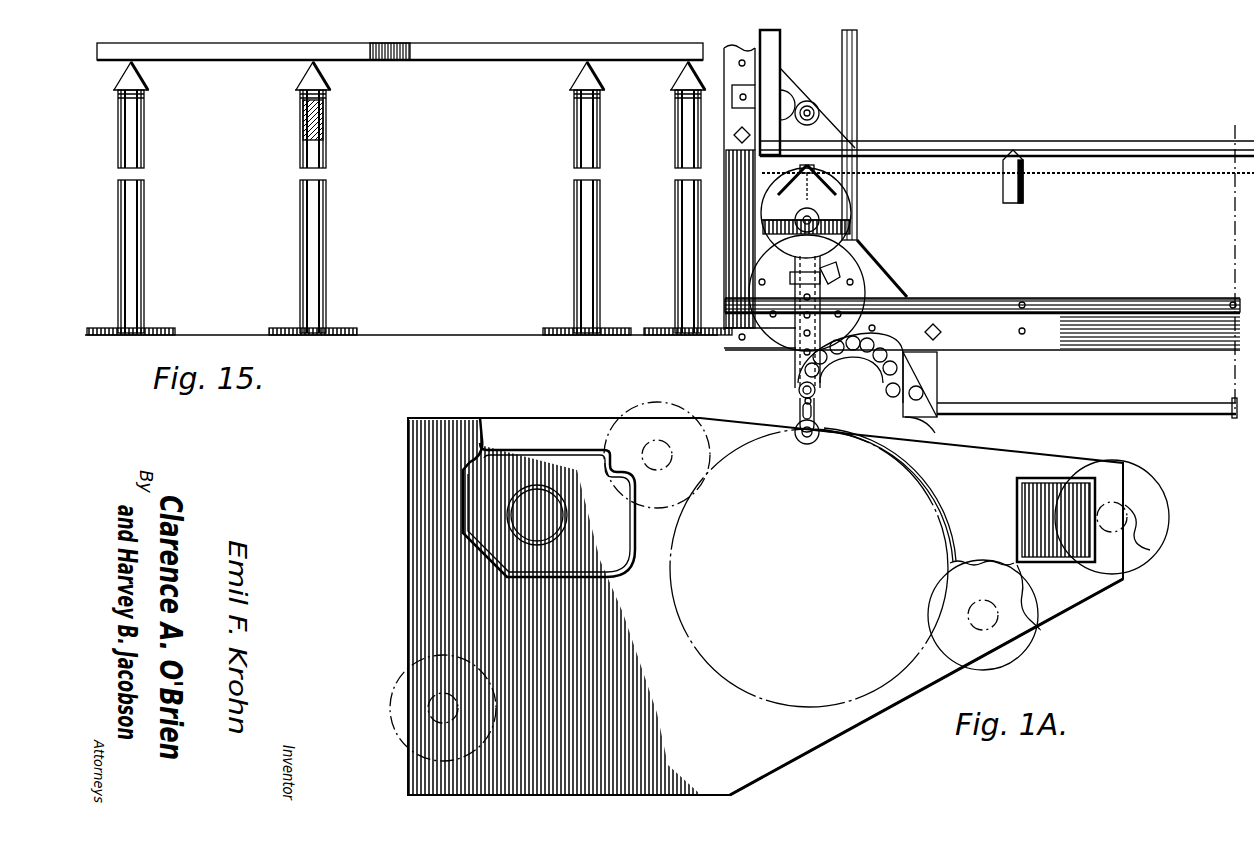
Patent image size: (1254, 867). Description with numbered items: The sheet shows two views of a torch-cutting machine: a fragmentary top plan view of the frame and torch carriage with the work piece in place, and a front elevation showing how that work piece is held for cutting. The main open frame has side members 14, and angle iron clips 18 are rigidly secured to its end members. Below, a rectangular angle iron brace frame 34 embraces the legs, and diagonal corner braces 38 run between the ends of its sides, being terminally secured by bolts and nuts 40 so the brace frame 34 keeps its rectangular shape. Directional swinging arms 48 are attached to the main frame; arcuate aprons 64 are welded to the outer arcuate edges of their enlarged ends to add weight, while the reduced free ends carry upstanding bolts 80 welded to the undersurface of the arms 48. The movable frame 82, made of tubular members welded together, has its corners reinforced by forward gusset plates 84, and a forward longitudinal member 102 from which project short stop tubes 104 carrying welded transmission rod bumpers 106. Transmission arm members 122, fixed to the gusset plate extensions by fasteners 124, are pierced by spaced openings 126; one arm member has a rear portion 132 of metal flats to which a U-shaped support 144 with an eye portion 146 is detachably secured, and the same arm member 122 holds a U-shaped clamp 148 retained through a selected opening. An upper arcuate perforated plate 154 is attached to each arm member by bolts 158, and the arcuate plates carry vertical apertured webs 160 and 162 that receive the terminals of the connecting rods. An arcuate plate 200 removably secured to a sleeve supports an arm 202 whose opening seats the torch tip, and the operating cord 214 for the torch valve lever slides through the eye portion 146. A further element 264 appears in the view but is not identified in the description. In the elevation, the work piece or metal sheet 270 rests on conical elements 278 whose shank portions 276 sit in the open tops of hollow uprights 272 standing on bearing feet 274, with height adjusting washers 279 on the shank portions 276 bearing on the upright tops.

In FIG. 1A, the side member 14 is at (1073, 298).
In FIG. 1A, the angle iron clips 18 is at (742, 85).
In FIG. 1A, the brace frame 34 is at (1135, 345).
In FIG. 1A, the diagonal corner braces 38 is at (897, 292).
In FIG. 1A, the bolts and nuts 40 is at (734, 133).
In FIG. 1A, the directional swinging arms 48 is at (855, 272).
In FIG. 1A, the arcuate aprons 64 is at (758, 338).
In FIG. 1A, the upstanding bolts 80 is at (820, 110).
In FIG. 1A, the movable frame 82 is at (782, 67).
In FIG. 1A, the forward gusset plates 84 is at (835, 132).
In FIG. 1A, the forward longitudinal member 102 is at (1081, 148).
In FIG. 1A, the short tubes or stops 104 is at (1025, 193).
In FIG. 1A, the transmission rod bumpers 106 is at (1003, 198).
In FIG. 1A, the transmission arm members 122 is at (795, 355).
In FIG. 1A, the fasteners 124 is at (806, 232).
In FIG. 1A, the spaced openings 126 is at (822, 288).
In FIG. 1A, the rear portion 132 is at (851, 210).
In FIG. 1A, the U-shaped support 144 is at (835, 195).
In FIG. 1A, the eye portion 146 is at (830, 165).
In FIG. 1A, the U-shaped clamp 148 is at (790, 283).
In FIG. 1A, the upper arcuate perforated plate 154 is at (822, 383).
In FIG. 1A, the bolts 158 is at (798, 391).
In FIG. 1A, the vertical web 160 is at (908, 374).
In FIG. 1A, the vertical web 162 is at (937, 430).
In FIG. 1A, the arcuate plate 200 is at (802, 403).
In FIG. 1A, the arm 202 is at (797, 446).
In FIG. 1A, the operating cord 214 is at (1090, 177).
In FIG. 1A, the rod 264 is at (1071, 403).
In FIG. 15, the work piece or metal sheet 270 is at (490, 61).
In FIG. 1A, the work piece or metal sheet 270 is at (795, 747).
In FIG. 15, the hollow uprights 272 is at (145, 214).
In FIG. 1A, the hollow uprights 272 is at (1127, 512).
In FIG. 15, the bearing feet 274 is at (165, 328).
In FIG. 1A, the bearing feet 274 is at (647, 407).
In FIG. 15, the shank portions 276 is at (325, 123).
In FIG. 15, the conical elements 278 is at (142, 74).
In FIG. 15, the height adjusting washers 279 is at (302, 93).